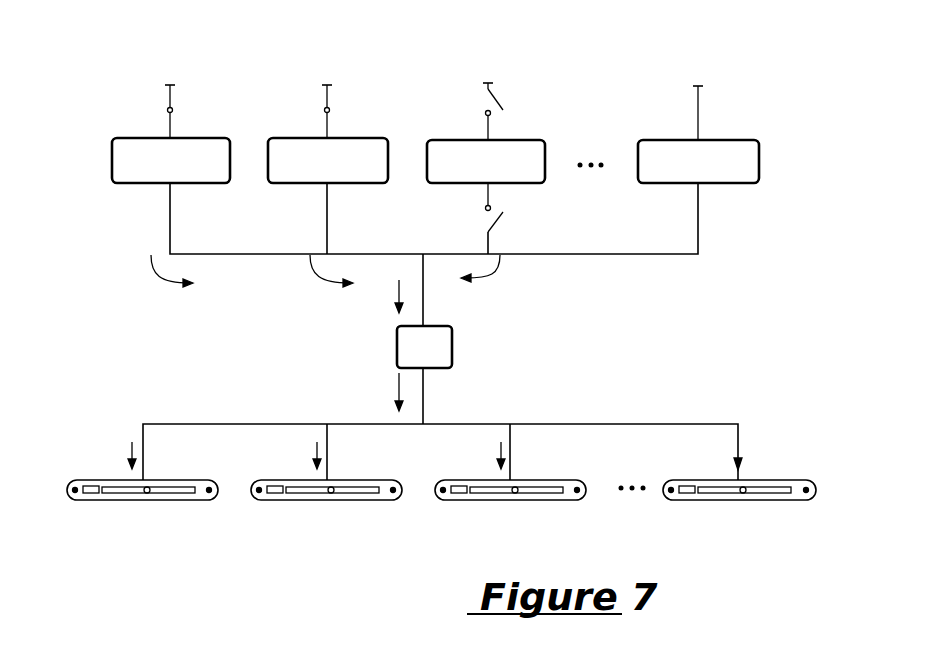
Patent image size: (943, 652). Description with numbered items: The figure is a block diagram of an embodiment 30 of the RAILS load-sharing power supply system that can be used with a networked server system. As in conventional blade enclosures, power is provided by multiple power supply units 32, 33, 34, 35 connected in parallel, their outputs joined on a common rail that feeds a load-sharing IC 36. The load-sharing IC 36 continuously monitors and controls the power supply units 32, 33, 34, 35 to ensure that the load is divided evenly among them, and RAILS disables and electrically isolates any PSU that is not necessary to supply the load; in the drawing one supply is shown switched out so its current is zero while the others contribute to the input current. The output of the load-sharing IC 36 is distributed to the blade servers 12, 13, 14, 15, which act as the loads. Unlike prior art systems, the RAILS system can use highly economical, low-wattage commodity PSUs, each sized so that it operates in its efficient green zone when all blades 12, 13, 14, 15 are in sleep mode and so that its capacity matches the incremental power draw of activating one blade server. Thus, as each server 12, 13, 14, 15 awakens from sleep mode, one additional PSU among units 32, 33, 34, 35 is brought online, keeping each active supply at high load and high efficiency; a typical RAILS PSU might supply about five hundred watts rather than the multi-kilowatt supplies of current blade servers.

The RAILS embodiment 30 is at (196, 47).
The power supply unit 32 is at (143, 138).
The power supply unit 33 is at (305, 138).
The power supply unit 34 is at (460, 140).
The power supply unit 35 is at (668, 140).
The load-sharing IC 36 is at (452, 347).
The blade server 12 is at (112, 480).
The blade server 13 is at (285, 480).
The blade server 14 is at (477, 480).
The blade server 15 is at (702, 480).